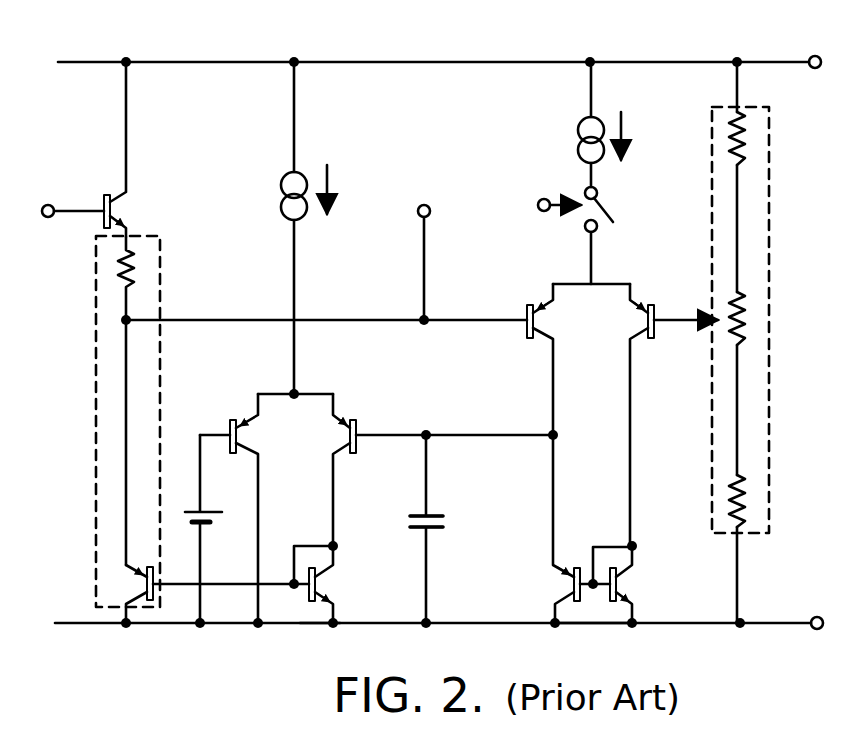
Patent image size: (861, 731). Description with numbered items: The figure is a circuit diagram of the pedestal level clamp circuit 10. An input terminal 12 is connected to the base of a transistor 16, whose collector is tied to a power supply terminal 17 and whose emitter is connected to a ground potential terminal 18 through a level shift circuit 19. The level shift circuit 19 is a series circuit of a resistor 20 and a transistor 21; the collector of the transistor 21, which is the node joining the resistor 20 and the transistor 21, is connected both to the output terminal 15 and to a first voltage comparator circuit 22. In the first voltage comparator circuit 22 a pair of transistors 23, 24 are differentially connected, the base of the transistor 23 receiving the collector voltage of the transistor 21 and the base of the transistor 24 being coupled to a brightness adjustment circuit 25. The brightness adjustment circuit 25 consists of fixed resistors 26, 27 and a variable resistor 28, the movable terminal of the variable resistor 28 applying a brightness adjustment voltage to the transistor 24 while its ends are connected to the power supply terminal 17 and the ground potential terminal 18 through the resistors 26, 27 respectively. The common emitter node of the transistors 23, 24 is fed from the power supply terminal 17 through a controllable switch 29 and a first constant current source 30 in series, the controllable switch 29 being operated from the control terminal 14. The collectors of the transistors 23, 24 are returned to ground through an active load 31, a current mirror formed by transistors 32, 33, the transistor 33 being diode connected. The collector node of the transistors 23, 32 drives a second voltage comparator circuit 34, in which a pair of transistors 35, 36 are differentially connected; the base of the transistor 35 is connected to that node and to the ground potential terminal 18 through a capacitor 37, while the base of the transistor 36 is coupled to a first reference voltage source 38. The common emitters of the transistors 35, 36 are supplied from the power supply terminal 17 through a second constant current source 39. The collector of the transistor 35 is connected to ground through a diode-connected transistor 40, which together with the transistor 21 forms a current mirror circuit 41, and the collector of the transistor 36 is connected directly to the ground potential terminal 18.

The pedestal level clamp circuit 10 is at (466, 62).
The input terminal 12 is at (69, 246).
The control terminal 14 is at (543, 212).
The output terminal 15 is at (430, 206).
The transistor 16 is at (104, 196).
The power supply terminal 17 is at (811, 56).
The ground potential terminal 18 is at (812, 630).
The level shift circuit 19 is at (96, 388).
The resistor 20 is at (134, 266).
The transistor 21 is at (140, 588).
The first voltage comparator circuit 22 is at (608, 342).
The transistor 23 is at (527, 330).
The transistor 24 is at (656, 333).
The brightness adjustment circuit 25 is at (735, 342).
The fixed resistor 26 is at (745, 150).
The fixed resistor 27 is at (745, 500).
The variable resistor 28 is at (745, 318).
The controllable switch 29 is at (600, 204).
The first constant current source 30 is at (578, 127).
The active load 31 is at (602, 605).
The transistor 32 is at (570, 586).
The transistor 33 is at (621, 588).
The second voltage comparator circuit 34 is at (318, 459).
The transistor 35 is at (356, 420).
The transistor 36 is at (230, 420).
The capacitor 37 is at (430, 512).
The first reference voltage source 38 is at (196, 510).
The second constant current source 39 is at (282, 180).
The transistor 40 is at (322, 582).
The current mirror circuit 41 is at (300, 605).